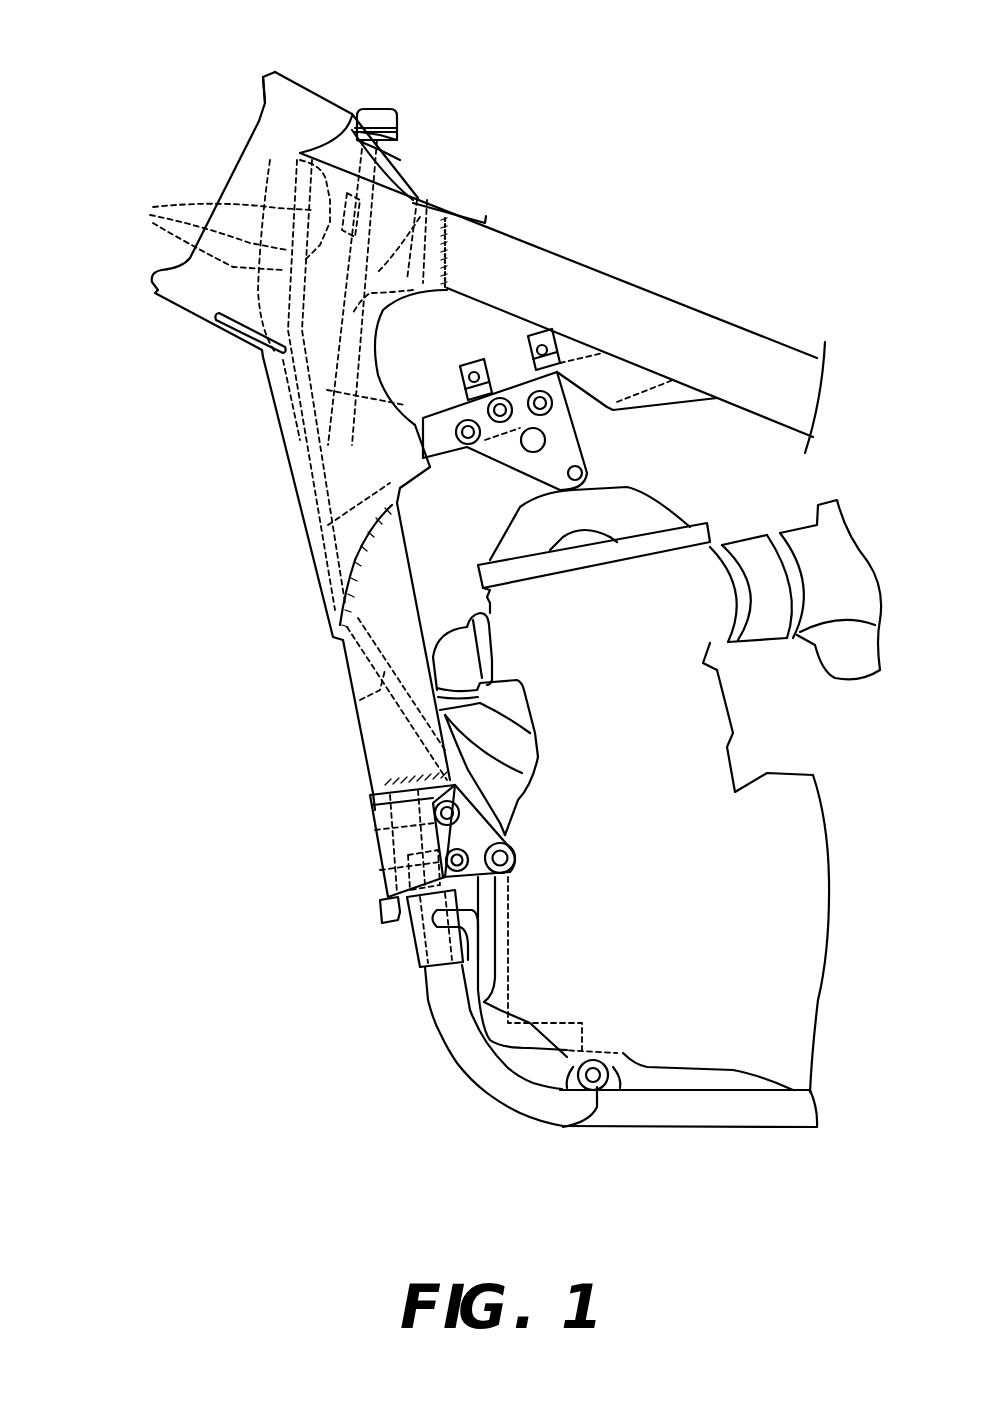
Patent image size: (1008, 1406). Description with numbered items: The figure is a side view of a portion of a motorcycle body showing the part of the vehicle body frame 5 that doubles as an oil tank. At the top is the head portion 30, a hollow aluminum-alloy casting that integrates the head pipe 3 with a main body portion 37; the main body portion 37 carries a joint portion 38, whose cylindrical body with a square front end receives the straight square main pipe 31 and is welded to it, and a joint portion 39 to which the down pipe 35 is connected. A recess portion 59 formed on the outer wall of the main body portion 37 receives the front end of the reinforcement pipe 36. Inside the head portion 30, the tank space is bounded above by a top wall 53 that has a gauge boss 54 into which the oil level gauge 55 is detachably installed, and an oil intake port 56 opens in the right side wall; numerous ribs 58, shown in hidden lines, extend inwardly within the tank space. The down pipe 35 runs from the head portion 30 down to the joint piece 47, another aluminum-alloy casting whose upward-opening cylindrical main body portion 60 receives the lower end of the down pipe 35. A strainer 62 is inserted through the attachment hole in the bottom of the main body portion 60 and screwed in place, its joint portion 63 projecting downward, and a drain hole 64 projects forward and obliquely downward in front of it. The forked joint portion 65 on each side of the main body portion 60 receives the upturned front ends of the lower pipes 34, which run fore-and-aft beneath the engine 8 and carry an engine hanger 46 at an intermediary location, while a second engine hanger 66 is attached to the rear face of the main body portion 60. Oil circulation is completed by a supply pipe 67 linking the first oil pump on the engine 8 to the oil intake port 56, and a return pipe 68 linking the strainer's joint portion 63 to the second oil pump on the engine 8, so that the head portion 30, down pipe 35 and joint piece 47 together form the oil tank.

The head pipe 3 is at (243, 170).
The vehicle body frame 5 is at (648, 264).
The engine 8 is at (810, 857).
The head portion 30 is at (212, 346).
The main pipe 31 is at (745, 325).
The lower pipes 34 is at (666, 1128).
The down pipe 35 is at (368, 760).
The reinforcement pipe 36 is at (400, 410).
The main body portion 37 is at (313, 355).
The joint portion 38 is at (470, 210).
The joint portion 39 is at (312, 572).
The engine hanger 46 is at (597, 1093).
The joint piece 47 is at (372, 843).
The top wall 53 is at (390, 150).
The gauge boss 54 is at (397, 133).
The oil level gauge 55 is at (380, 108).
The oil intake port 56 is at (257, 120).
The ribs 58 is at (435, 185).
The recess portion 59 is at (437, 458).
The main body portion 60 is at (380, 820).
The strainer 62 is at (395, 877).
The joint portion 63 is at (390, 925).
The drain hole 64 is at (380, 905).
The forked joint portion 65 is at (413, 953).
The engine hanger 66 is at (477, 835).
The supply pipe 67 is at (357, 712).
The return pipe 68 is at (505, 935).